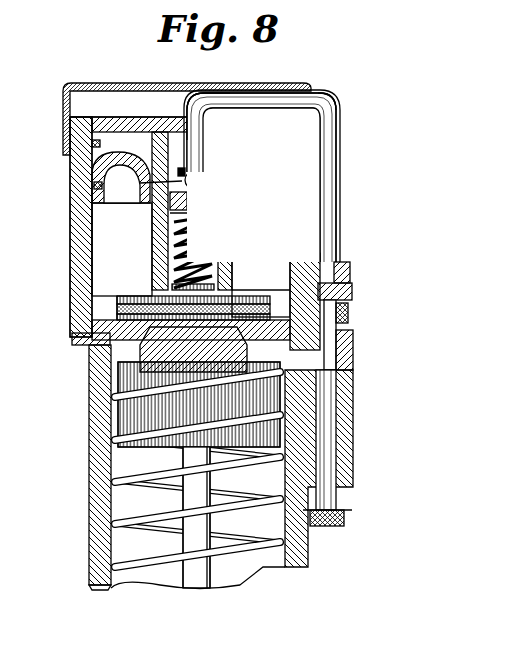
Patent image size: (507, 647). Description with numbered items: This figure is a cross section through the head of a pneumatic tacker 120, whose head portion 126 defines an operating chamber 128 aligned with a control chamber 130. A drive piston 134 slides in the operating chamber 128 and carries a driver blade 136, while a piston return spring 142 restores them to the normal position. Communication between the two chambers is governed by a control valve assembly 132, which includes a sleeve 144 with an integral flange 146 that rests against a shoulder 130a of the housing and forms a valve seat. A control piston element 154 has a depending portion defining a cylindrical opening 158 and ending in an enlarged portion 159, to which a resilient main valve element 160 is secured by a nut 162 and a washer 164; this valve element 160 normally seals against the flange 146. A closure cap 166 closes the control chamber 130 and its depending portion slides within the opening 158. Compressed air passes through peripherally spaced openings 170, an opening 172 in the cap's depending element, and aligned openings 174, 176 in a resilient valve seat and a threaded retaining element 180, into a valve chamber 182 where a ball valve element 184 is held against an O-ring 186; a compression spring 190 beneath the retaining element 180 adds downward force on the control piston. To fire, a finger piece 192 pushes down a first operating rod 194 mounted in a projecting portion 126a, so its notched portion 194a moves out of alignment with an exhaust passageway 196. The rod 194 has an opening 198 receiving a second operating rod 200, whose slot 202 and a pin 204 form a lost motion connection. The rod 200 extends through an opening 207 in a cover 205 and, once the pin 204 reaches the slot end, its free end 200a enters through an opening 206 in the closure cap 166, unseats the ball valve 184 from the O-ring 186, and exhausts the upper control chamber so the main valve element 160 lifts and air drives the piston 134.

The pneumatic tacker 120 is at (345, 48).
The head portion 126 is at (98, 515).
The projecting portion 126a is at (350, 412).
The operating chamber 128 is at (117, 592).
The control chamber 130 is at (88, 240).
The shoulder 130a is at (86, 338).
The control valve assembly 132 is at (104, 261).
The drive piston 134 is at (161, 472).
The driver blade 136 is at (200, 578).
The piston return spring 142 is at (260, 560).
The sleeve 144 is at (88, 214).
The flange 146 is at (110, 338).
The control piston element 154 is at (92, 165).
The cylindrical opening 158 is at (163, 293).
The enlarged portion 159 is at (240, 300).
The resilient main valve element 160 is at (92, 291).
The nut 162 is at (112, 385).
The washer 164 is at (125, 290).
The closure cap 166 is at (106, 116).
The peripherally spaced openings 170 is at (220, 286).
The opening 172 is at (226, 222).
The opening 174 is at (231, 176).
The opening 176 is at (190, 205).
The retaining element 180 is at (233, 213).
The valve chamber 182 is at (172, 203).
The ball valve element 184 is at (166, 181).
The O-ring 186 is at (219, 133).
The compression spring 190 is at (222, 245).
The finger piece 192 is at (350, 514).
The first section of operating rod 194 is at (340, 506).
The notched portion 194a is at (340, 348).
The passageway 196 is at (349, 357).
The opening 198 is at (349, 310).
The second operating rod 200 is at (337, 135).
The free end 200a is at (219, 112).
The slot 202 is at (349, 320).
The pin 204 is at (348, 290).
The cover 205 is at (66, 127).
The opening 206 is at (177, 92).
The opening 207 is at (334, 97).